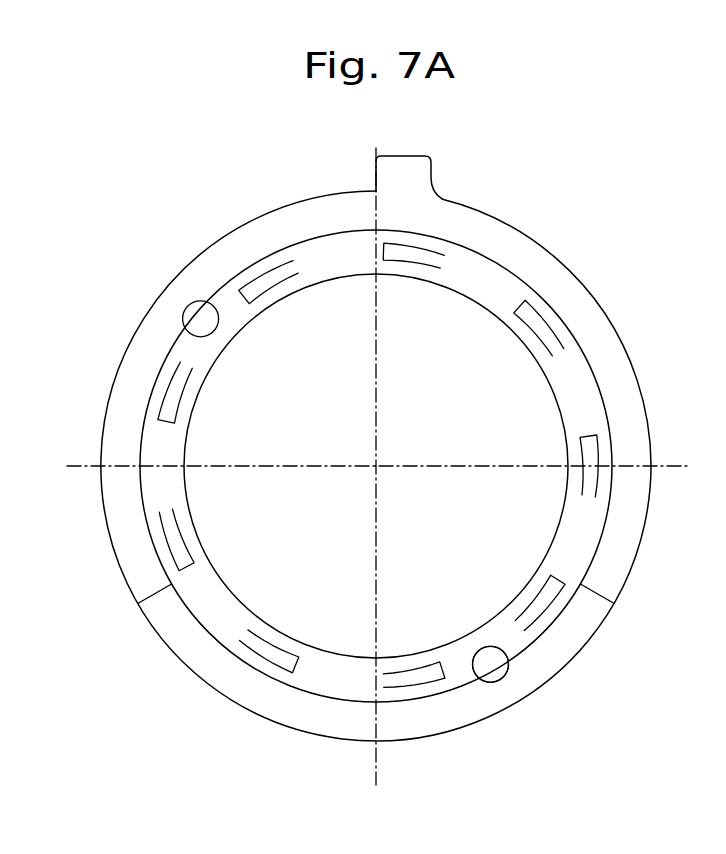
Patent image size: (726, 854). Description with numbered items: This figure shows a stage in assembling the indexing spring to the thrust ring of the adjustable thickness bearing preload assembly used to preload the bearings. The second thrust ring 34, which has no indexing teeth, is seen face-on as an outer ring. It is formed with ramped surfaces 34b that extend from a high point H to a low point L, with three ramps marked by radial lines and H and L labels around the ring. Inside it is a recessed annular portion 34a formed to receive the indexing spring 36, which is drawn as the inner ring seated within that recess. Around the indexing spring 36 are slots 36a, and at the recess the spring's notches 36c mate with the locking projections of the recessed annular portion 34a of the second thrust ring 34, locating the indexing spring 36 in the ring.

The second thrust ring 34 is at (530, 252).
The recessed annular portion 34a is at (497, 662).
The ramped surface 34b is at (222, 680).
The indexing spring 36 is at (495, 297).
The slots of rotary ring 36a is at (273, 282).
The notches 36c is at (488, 655).